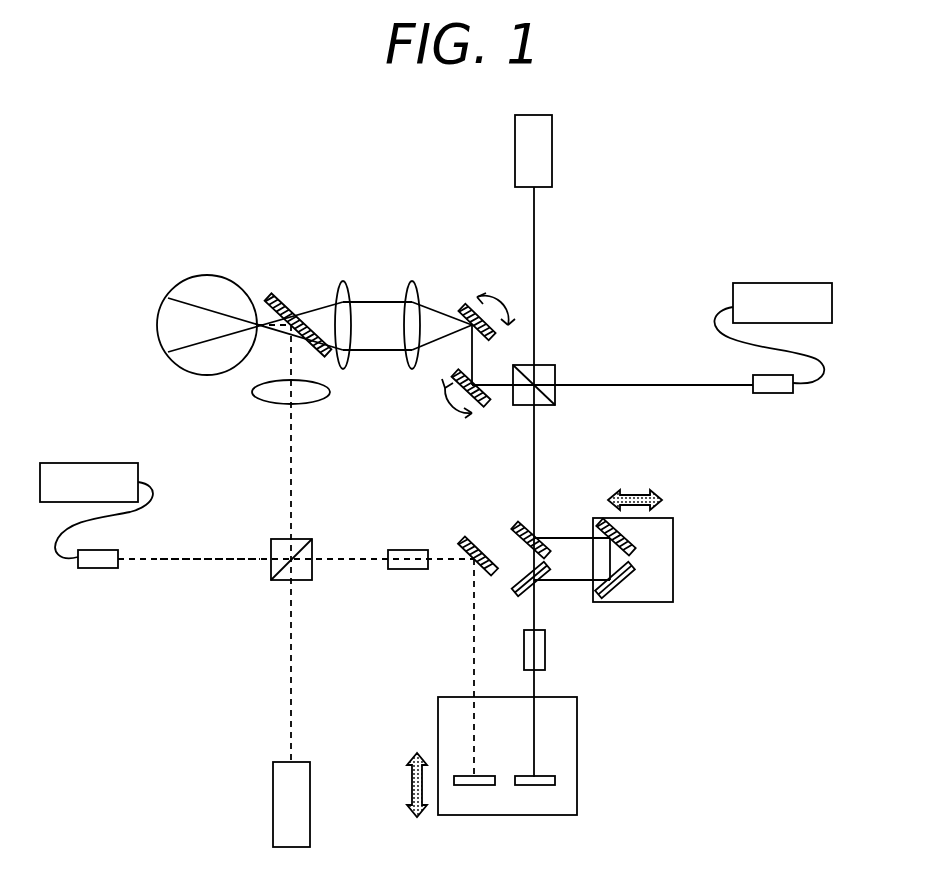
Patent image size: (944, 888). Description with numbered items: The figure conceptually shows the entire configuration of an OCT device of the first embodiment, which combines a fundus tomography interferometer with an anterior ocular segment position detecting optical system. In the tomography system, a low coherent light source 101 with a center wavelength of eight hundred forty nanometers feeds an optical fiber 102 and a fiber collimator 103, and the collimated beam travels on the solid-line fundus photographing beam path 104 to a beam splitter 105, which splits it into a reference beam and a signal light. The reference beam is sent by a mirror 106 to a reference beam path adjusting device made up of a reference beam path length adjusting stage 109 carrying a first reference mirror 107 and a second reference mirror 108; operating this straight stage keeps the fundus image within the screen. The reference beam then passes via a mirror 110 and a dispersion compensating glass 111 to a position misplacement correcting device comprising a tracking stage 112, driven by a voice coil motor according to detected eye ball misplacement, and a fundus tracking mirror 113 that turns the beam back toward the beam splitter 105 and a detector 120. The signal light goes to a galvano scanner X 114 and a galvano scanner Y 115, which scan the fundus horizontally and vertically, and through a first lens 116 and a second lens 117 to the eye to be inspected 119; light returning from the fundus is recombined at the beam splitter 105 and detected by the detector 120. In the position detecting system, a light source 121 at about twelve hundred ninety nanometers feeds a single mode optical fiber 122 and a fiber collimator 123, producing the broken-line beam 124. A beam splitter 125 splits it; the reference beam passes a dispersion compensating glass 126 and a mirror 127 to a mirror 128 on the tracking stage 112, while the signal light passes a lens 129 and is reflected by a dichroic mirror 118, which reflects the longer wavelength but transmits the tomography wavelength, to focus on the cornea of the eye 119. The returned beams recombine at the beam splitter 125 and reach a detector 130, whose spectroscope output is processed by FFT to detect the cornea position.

The low coherent light source for fundus tomography 101 is at (793, 283).
The optical fiber 102 is at (812, 355).
The fiber collimator 103 is at (777, 393).
The fundus photographing beam path 104 is at (650, 385).
The beam splitter 105 is at (545, 407).
The mirror 106 is at (515, 525).
The first reference mirror 107 is at (630, 542).
The second reference mirror 108 is at (630, 568).
The reference beam path length adjusting stage 109 is at (652, 602).
The mirror 110 is at (517, 593).
The dispersion compensating glass 111 is at (545, 640).
The tracking stage 112 is at (577, 750).
The fundus tracking mirror 113 is at (535, 785).
The galvano scanner X 114 is at (485, 405).
The galvano scanner Y 115 is at (462, 308).
The first lens 116 is at (412, 281).
The second lens 117 is at (343, 281).
The dichroic mirror 118 is at (283, 290).
The eye to be inspected 119 is at (210, 276).
The detector 120 is at (552, 132).
The light source 121 is at (88, 463).
The single mode optical fiber 122 is at (148, 490).
The fiber collimator 123 is at (97, 568).
The beam for detecting an anterior ocular segment position 124 is at (213, 559).
The beam splitter 125 is at (303, 580).
The dispersion compensating glass 126 is at (410, 569).
The mirror 127 is at (463, 542).
The mirror 128 is at (472, 785).
The lens 129 is at (312, 403).
The detector 130 is at (310, 807).